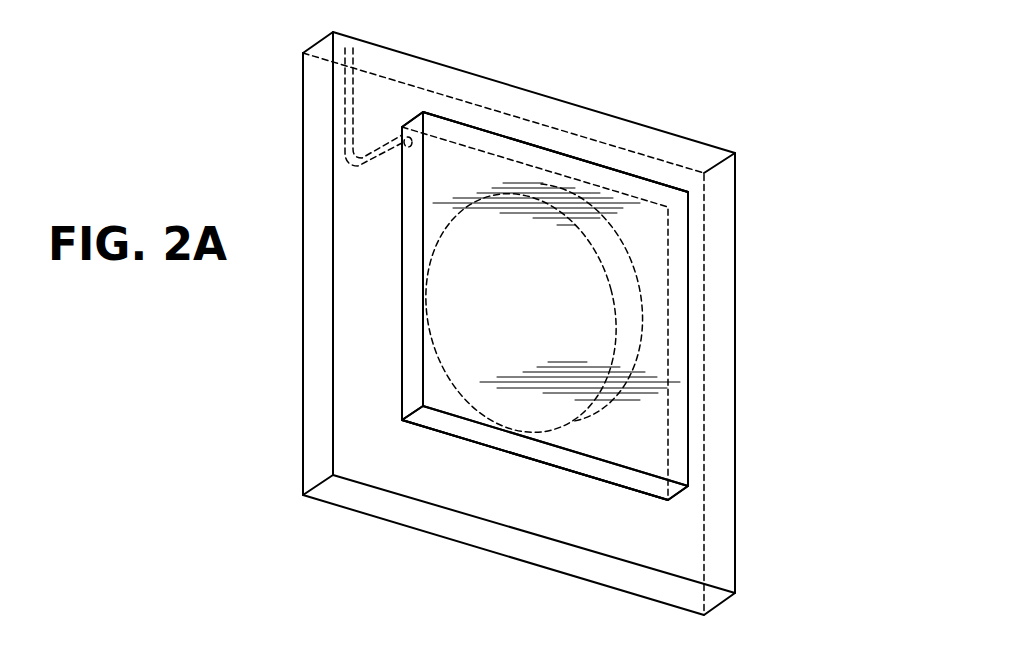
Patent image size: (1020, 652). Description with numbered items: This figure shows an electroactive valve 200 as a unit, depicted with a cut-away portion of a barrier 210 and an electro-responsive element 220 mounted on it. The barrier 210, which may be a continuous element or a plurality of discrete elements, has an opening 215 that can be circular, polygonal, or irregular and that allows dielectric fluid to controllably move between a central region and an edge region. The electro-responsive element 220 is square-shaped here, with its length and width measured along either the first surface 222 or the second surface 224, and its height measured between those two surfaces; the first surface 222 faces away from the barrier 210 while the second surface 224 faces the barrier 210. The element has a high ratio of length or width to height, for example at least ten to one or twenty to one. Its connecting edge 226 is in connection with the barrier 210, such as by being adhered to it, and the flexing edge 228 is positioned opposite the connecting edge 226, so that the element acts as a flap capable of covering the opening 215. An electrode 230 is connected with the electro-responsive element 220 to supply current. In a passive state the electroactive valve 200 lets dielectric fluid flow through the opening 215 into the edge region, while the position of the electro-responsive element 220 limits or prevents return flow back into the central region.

The electroactive valve 200 is at (737, 82).
The barrier 210 is at (717, 245).
The opening 215 is at (445, 366).
The electro-responsive element 220 is at (658, 407).
The first surface 222 is at (598, 175).
The second surface 224 is at (593, 478).
The connecting edge 226 is at (537, 148).
The flexing edge 228 is at (478, 433).
The electrode 230 is at (345, 110).